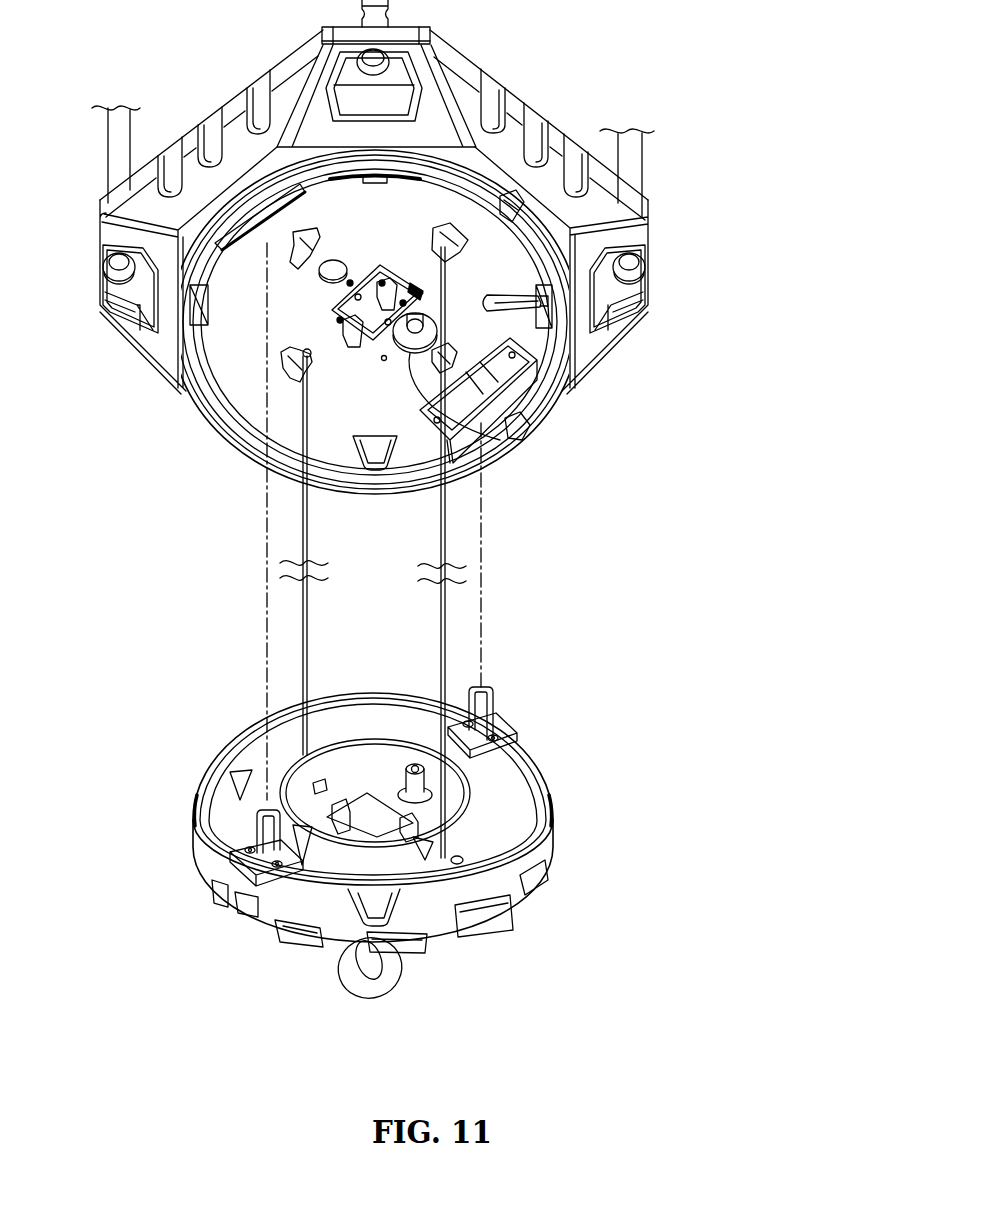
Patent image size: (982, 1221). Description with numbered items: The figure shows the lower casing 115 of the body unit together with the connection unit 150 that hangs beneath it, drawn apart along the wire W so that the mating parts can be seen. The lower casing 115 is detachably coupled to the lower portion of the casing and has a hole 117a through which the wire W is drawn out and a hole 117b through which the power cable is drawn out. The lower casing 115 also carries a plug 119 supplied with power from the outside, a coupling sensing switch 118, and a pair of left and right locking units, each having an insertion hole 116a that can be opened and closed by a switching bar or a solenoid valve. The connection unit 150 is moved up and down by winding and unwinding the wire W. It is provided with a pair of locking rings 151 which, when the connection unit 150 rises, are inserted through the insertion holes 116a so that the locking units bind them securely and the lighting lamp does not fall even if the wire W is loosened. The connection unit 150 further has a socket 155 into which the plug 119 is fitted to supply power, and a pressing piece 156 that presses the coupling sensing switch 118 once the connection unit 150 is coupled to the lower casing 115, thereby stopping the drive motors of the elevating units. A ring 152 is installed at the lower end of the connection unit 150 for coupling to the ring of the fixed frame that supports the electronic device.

The lower casing 115 is at (603, 211).
The insertion hole 116a is at (226, 372).
The hole 117a is at (311, 353).
The hole 117b is at (518, 314).
The coupling sensing switch 118 is at (480, 385).
The plug 119 is at (350, 337).
The wire W is at (445, 607).
The connection unit 150 is at (572, 870).
The locking ring 151 is at (492, 708).
The ring 152 is at (383, 977).
The socket 155 is at (353, 772).
The pressing piece 156 is at (417, 777).